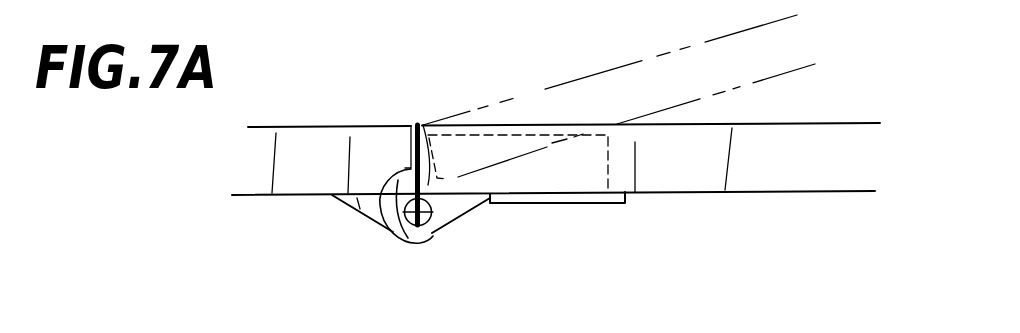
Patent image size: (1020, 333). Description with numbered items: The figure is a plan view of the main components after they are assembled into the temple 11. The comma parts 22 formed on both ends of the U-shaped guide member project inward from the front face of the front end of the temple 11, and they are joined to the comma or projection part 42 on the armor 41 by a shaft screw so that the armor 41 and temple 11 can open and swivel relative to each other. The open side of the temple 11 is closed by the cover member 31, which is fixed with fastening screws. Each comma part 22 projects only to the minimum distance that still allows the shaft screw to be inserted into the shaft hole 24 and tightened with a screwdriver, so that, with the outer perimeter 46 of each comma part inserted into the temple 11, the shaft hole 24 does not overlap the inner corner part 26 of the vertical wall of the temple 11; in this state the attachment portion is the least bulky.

The temple 11 is at (553, 112).
The comma part 22 is at (407, 230).
The shaft hole 24 is at (423, 220).
The inner corner part 26 is at (421, 126).
The cover member 31 is at (523, 203).
The armor 41 is at (297, 143).
The projection part 42 is at (363, 213).
The outer perimeter 46 is at (398, 170).